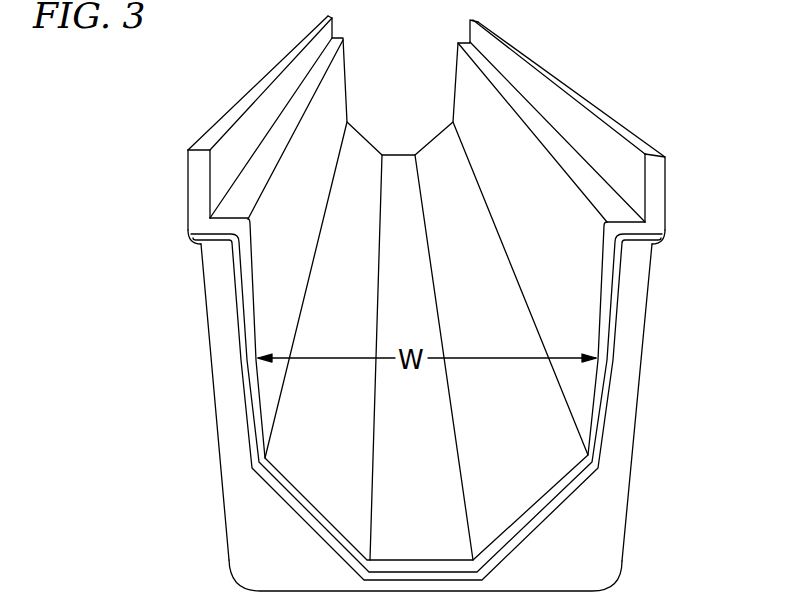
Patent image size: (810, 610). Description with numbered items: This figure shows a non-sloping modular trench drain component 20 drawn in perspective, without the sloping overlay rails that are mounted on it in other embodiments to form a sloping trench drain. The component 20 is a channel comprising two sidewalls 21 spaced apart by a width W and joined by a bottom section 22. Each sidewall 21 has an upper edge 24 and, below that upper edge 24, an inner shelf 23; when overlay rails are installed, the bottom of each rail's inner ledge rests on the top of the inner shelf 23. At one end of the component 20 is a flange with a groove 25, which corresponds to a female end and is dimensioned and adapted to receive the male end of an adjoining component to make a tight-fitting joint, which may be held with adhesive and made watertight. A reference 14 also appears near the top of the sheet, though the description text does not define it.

The trough 14 is at (572, 0).
The non-sloping modular trench drain component 20 is at (190, 462).
The sidewalls 21 is at (213, 372).
The bottom section 22 is at (553, 593).
The inner shelf 23 is at (235, 210).
The upper edge 24 is at (203, 144).
The groove 25 is at (590, 472).